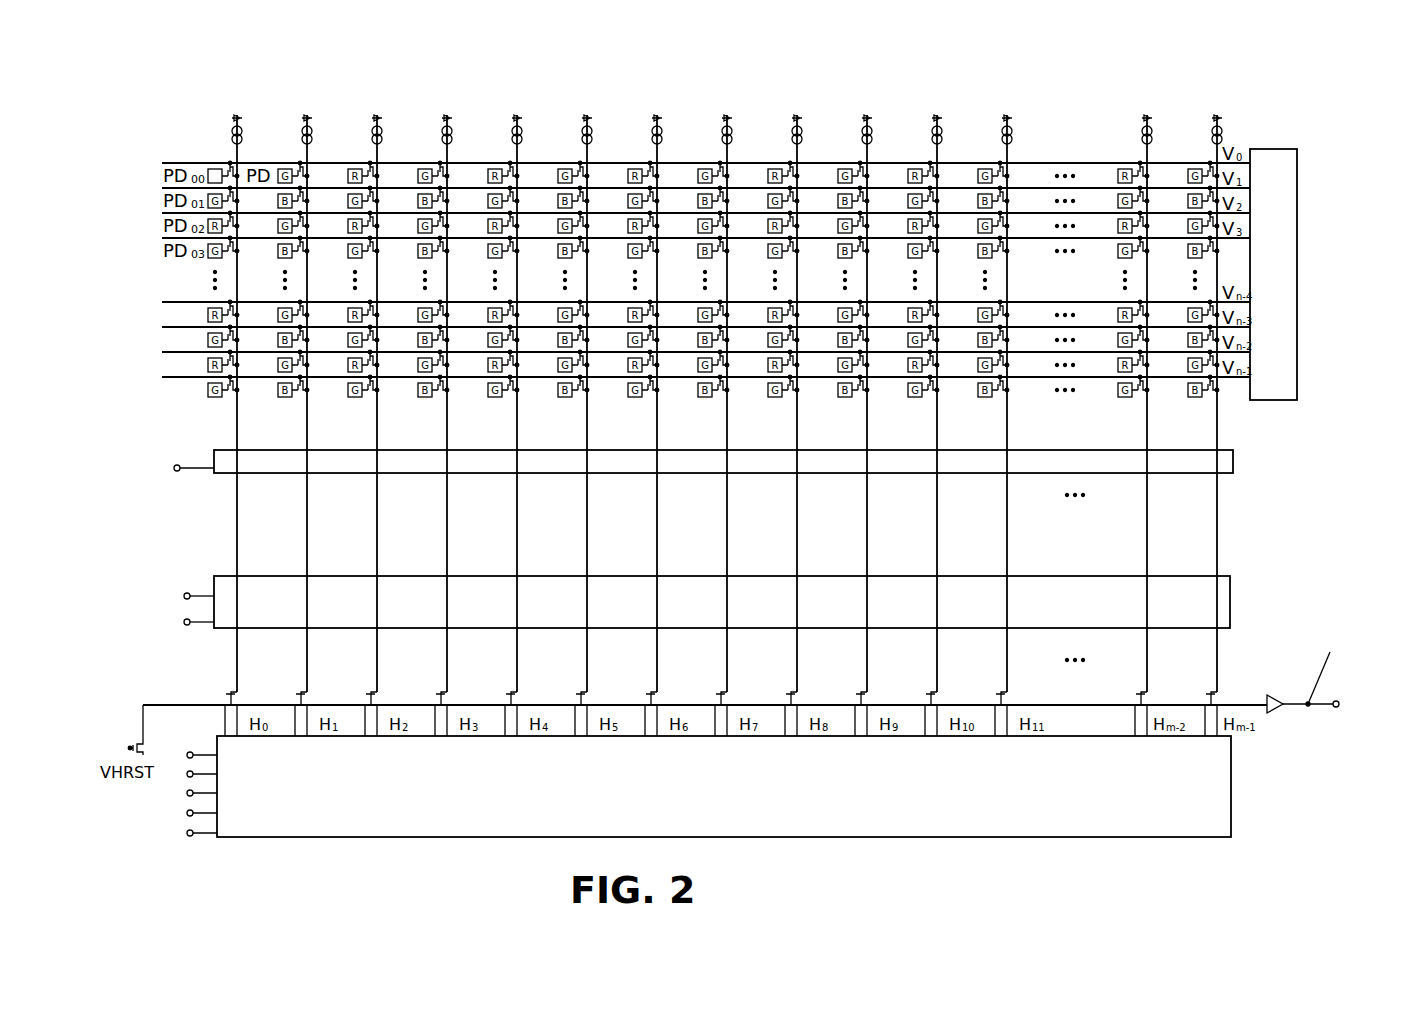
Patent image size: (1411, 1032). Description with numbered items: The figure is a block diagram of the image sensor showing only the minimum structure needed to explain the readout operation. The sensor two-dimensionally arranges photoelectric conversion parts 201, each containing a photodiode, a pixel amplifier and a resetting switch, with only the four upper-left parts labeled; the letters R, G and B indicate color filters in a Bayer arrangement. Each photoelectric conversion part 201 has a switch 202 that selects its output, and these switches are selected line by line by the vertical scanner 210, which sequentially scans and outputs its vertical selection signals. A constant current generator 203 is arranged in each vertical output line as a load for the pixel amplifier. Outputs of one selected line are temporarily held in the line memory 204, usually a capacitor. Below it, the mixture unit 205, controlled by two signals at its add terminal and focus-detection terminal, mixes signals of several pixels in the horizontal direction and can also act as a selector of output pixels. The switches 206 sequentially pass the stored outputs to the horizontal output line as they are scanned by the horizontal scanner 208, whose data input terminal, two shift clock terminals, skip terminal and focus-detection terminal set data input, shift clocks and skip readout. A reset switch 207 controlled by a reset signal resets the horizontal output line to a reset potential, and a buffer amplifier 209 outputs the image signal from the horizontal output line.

The photoelectric conversion part 201 is at (210, 170).
The switch 202 is at (228, 168).
The constant current generator 203 is at (240, 130).
The line memory 204 is at (219, 458).
The mixture unit 205 is at (222, 588).
The switch 206 is at (232, 697).
The switch 207 is at (142, 742).
The horizontal scanner 208 is at (1220, 753).
The buffer amplifier 209 is at (1275, 695).
The vertical scanner 210 is at (1287, 157).